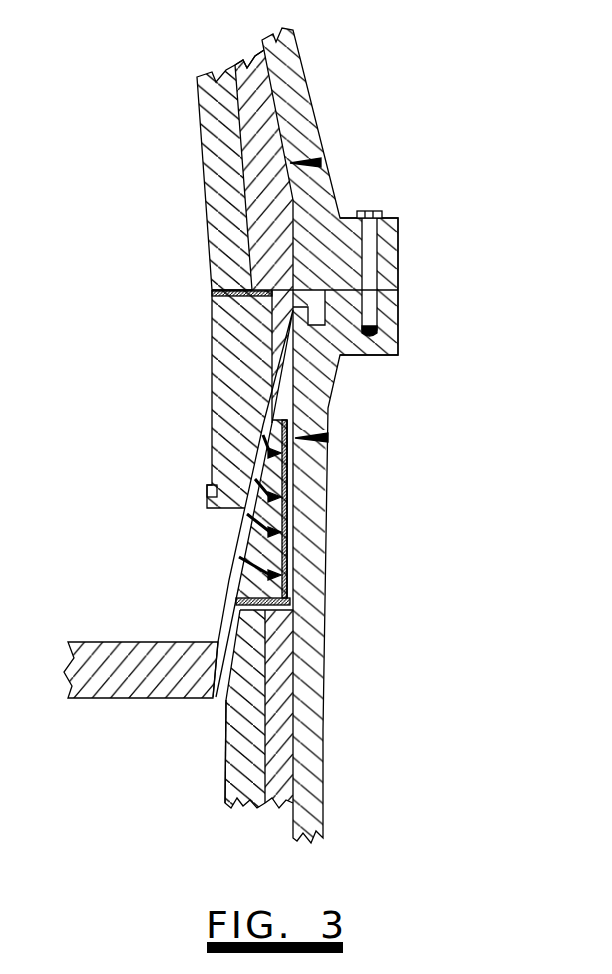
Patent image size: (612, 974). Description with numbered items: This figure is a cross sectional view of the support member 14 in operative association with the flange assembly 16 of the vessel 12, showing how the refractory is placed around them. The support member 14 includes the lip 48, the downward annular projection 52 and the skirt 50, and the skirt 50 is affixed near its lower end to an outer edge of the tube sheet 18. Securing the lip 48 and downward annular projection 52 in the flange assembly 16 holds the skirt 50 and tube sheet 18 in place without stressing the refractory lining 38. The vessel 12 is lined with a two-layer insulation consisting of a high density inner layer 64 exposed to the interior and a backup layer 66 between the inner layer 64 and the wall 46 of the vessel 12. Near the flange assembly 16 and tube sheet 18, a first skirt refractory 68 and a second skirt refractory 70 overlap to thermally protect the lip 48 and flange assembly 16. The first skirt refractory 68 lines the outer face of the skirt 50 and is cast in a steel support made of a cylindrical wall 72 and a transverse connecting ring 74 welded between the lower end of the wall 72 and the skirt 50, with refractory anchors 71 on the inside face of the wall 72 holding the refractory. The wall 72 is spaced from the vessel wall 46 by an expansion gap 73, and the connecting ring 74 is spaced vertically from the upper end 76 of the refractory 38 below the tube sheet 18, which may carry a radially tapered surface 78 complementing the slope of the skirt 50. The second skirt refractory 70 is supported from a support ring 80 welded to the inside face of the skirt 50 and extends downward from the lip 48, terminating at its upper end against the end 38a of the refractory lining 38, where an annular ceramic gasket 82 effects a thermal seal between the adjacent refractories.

The vessel 12 is at (341, 435).
The support member 14 is at (234, 557).
The flange assembly 16 is at (398, 272).
The tube sheet 18 is at (100, 642).
The refractory lining 38 is at (200, 163).
The end of refractory lining 38a is at (212, 280).
The wall of vessel 46 is at (288, 62).
The lip 48 is at (321, 290).
The skirt 50 is at (224, 610).
The downward annular projection 52 is at (318, 327).
The high density inner layer 64 is at (210, 73).
The backup layer 66 is at (247, 62).
The first skirt refractory 68 is at (280, 523).
The second skirt refractory 70 is at (213, 393).
The refractory anchors 71 is at (280, 488).
The cylindrical wall 72 is at (290, 556).
The expansion gap 73 is at (290, 540).
The transverse connecting ring 74 is at (290, 588).
The upper end of refractory 76 is at (296, 655).
The radially tapered surface 78 is at (223, 714).
The support ring 80 is at (207, 507).
The annular ceramic gasket 82 is at (212, 297).